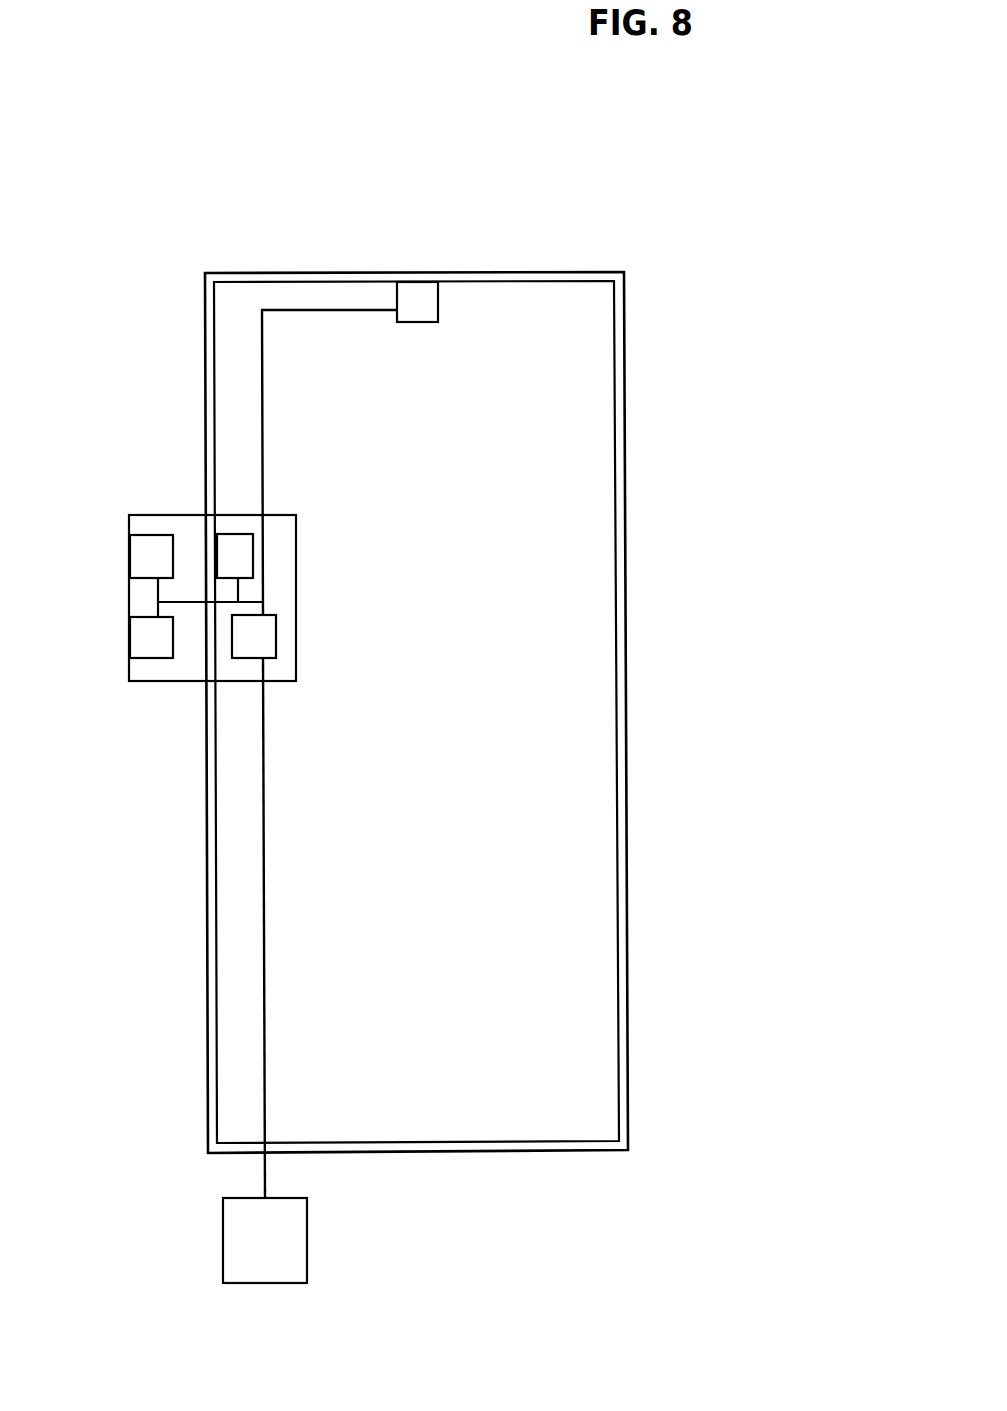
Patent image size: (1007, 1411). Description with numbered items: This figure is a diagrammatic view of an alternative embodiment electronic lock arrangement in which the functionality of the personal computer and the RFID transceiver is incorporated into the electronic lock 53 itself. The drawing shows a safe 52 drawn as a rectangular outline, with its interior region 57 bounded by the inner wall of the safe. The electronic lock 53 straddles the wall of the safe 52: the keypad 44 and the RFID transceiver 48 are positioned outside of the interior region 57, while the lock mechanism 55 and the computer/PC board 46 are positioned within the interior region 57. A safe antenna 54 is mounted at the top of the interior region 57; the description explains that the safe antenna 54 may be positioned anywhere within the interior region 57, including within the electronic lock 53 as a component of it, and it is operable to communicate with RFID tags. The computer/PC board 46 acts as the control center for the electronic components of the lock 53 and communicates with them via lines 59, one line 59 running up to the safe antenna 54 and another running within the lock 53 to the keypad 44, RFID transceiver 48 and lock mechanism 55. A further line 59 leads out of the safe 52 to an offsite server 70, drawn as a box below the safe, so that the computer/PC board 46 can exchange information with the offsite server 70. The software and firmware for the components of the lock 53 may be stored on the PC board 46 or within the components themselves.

The safe 52 is at (511, 217).
The interior region 57 is at (552, 325).
The safe antenna 54 is at (420, 322).
The lines 59 is at (263, 452).
The electronic lock 53 is at (157, 503).
The keypad 44 is at (130, 558).
The RFID transceiver 48 is at (130, 640).
The lock mechanism 55 is at (232, 534).
The computer/PC board 46 is at (277, 633).
The offsite server 70 is at (307, 1215).